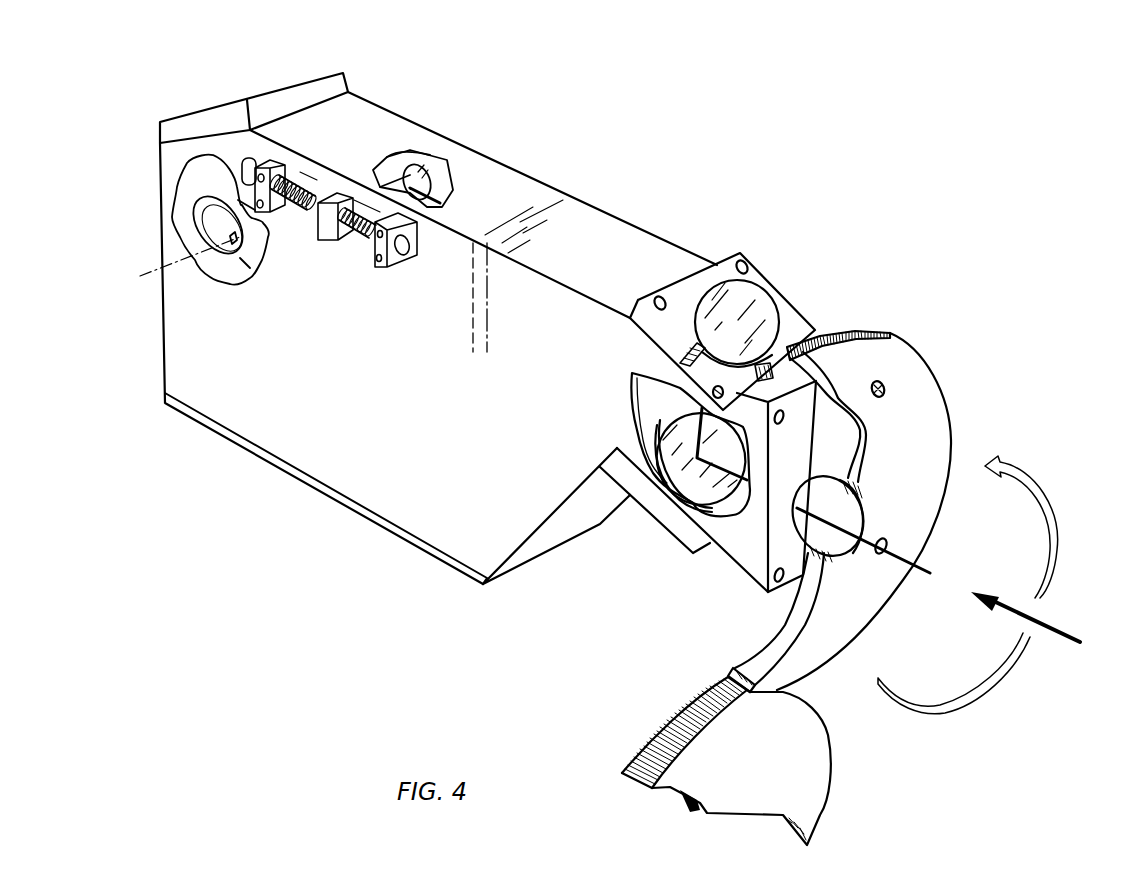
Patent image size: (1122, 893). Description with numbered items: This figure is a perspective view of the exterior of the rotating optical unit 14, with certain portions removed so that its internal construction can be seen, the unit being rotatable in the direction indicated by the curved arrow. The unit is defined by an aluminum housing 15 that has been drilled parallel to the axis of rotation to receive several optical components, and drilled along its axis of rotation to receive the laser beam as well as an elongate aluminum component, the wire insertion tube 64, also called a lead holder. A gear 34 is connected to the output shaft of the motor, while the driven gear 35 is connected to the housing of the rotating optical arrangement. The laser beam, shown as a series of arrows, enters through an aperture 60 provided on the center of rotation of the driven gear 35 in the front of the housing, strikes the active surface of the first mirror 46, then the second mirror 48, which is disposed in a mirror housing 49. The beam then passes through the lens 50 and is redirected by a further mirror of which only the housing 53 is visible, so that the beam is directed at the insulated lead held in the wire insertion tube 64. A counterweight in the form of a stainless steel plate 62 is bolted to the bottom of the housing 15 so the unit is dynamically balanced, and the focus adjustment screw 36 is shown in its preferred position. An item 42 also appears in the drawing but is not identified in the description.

The rotating optical unit 14 is at (612, 198).
The aluminum housing 15 is at (443, 145).
The gear 34 is at (800, 780).
The driven gear 35 is at (924, 388).
The focus adjustment screw 36 is at (298, 178).
The light beam direction arrow 42 is at (1045, 627).
The first mirror 46 is at (683, 481).
The second mirror 48 is at (690, 362).
The mirror housing 49 is at (758, 283).
The lens 50 is at (442, 170).
The mirror housing 53 is at (256, 97).
The aperture 60 is at (835, 492).
The stainless steel plate 62 is at (370, 512).
The wire insertion tube 64 is at (260, 248).